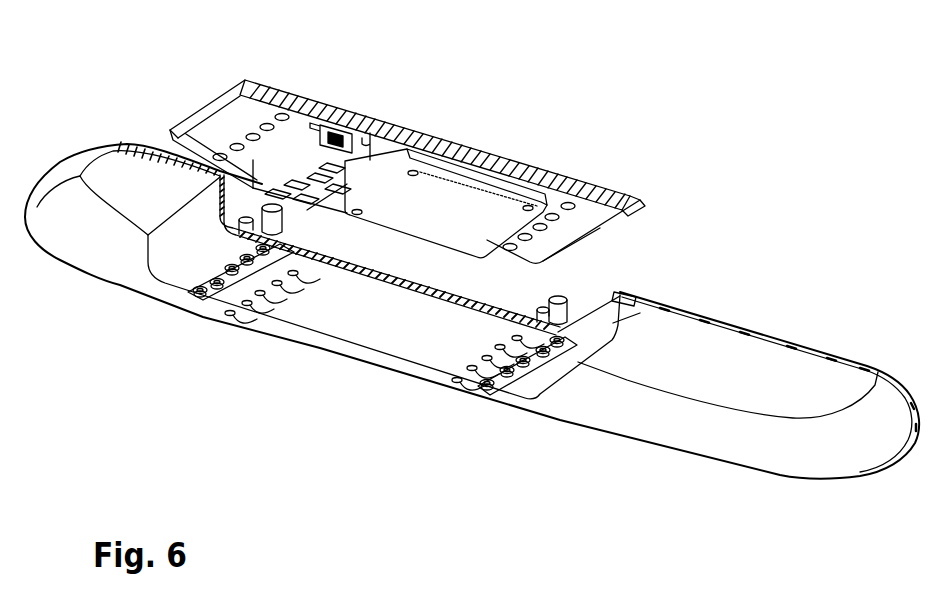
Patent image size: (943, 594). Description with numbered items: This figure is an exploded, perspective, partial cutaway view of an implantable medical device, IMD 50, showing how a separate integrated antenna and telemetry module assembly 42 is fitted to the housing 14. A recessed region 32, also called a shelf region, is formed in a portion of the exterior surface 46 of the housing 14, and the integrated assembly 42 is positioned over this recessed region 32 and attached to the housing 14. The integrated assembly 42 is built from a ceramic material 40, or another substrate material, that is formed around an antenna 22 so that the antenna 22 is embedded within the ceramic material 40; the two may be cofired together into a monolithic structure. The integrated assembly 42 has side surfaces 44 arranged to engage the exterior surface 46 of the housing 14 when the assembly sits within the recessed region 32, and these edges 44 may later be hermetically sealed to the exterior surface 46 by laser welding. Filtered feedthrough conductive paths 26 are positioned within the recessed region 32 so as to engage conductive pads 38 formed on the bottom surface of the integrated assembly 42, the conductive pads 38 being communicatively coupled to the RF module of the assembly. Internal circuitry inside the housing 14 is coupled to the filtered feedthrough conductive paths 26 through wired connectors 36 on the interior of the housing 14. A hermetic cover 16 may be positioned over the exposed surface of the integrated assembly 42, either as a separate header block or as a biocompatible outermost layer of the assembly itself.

The housing 14 is at (607, 416).
The hermetic cover 16 is at (256, 79).
The antenna 22 is at (445, 144).
The filtered feedthrough conductive paths 26 is at (581, 297).
The recessed region 32 is at (613, 323).
The wired connectors 36 is at (207, 300).
The conductive pads 38 is at (600, 228).
The ceramic material 40 is at (541, 176).
The integrated antenna and telemetry module assembly 42 is at (360, 110).
The side surfaces 44 is at (197, 113).
The exterior surface 46 is at (620, 293).
The IMD 50 is at (398, 418).